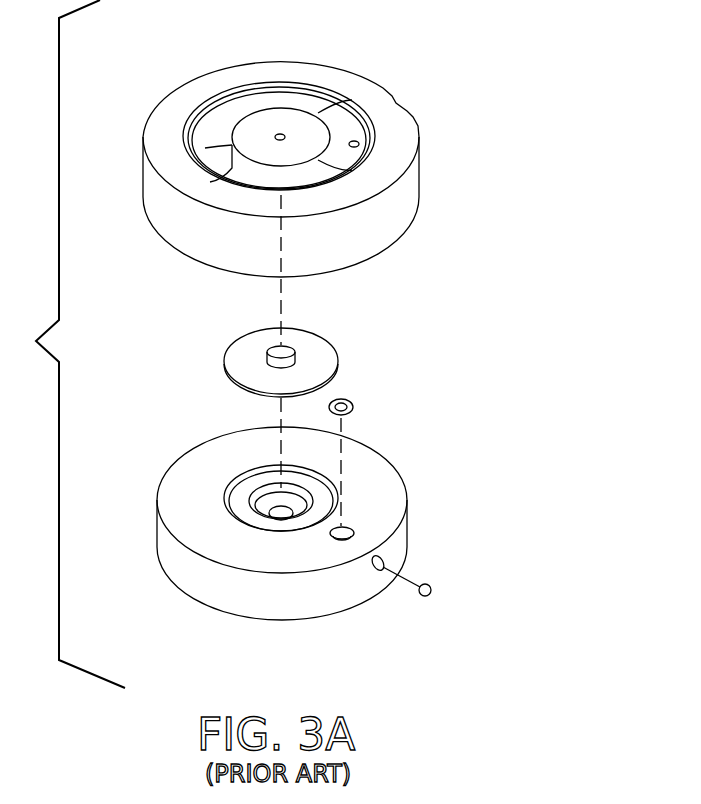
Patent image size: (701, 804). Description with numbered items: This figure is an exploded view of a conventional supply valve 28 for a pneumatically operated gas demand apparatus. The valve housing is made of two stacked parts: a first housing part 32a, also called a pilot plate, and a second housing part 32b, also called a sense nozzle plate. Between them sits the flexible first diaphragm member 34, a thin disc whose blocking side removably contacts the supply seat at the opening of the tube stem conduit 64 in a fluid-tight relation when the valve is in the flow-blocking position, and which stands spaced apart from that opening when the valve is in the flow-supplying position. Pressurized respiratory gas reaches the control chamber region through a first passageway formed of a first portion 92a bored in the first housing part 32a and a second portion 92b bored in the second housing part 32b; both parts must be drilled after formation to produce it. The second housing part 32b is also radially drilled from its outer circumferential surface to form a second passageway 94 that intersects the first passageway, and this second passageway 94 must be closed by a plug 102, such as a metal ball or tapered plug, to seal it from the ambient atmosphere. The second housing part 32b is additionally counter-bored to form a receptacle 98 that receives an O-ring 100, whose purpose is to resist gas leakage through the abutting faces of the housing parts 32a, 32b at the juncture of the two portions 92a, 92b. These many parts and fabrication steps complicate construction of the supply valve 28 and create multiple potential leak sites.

The supply valve 28 is at (448, 200).
The first housing part 32a is at (420, 158).
The second housing part 32b is at (237, 585).
The first diaphragm member 34 is at (262, 331).
The tube stem conduit 64 is at (279, 134).
The first portion of first passageway 92a is at (355, 141).
The second portion of first passageway 92b is at (354, 529).
The second passageway 94 is at (378, 572).
The receptacle 98 is at (353, 530).
The O-ring 100 is at (353, 406).
The plug 102 is at (431, 587).